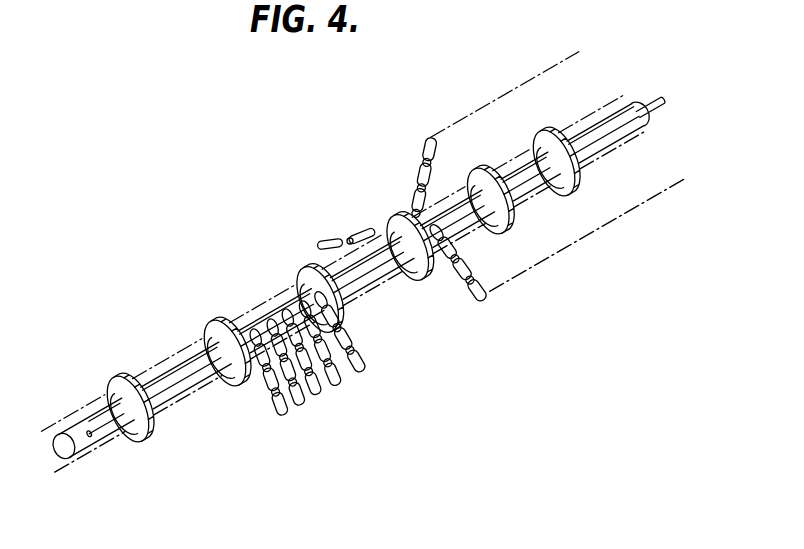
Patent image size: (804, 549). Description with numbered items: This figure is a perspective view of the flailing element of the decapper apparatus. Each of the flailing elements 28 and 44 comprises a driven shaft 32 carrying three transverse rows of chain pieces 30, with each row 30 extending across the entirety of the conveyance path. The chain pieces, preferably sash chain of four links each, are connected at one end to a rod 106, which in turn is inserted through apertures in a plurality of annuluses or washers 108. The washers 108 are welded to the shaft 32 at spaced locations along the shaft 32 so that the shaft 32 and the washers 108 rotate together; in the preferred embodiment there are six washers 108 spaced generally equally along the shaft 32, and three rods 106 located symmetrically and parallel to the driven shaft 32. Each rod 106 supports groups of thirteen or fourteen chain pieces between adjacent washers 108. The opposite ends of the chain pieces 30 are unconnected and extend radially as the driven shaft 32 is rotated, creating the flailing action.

The upper chain flail element 28 is at (272, 270).
The flailing element 44 is at (345, 281).
The chain pieces 30 is at (297, 407).
The driven shaft 32 is at (362, 287).
The rod 106 is at (382, 267).
The washers 108 is at (583, 257).